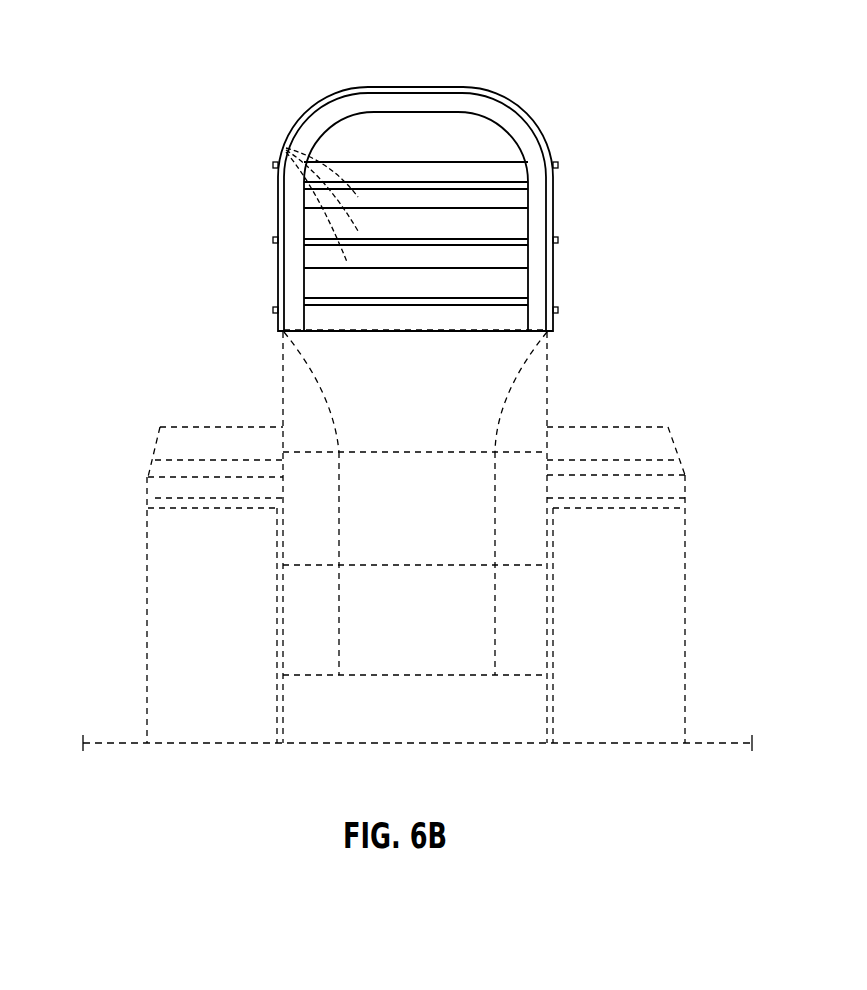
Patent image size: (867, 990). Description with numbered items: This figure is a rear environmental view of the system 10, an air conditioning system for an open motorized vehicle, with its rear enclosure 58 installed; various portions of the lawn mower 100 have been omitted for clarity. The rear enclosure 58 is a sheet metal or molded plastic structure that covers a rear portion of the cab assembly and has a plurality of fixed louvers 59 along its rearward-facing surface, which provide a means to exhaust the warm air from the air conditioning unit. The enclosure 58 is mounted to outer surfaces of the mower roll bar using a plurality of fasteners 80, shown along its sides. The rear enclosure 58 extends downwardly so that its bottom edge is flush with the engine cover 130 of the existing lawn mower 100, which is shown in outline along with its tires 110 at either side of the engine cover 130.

The system 10 is at (680, 59).
The rear enclosure 58 is at (520, 103).
The fixed louvers 59 is at (286, 149).
The fasteners 80 is at (273, 240).
The lawn mower 100 is at (148, 478).
The tires 110 is at (147, 595).
The engine cover 130 is at (505, 410).